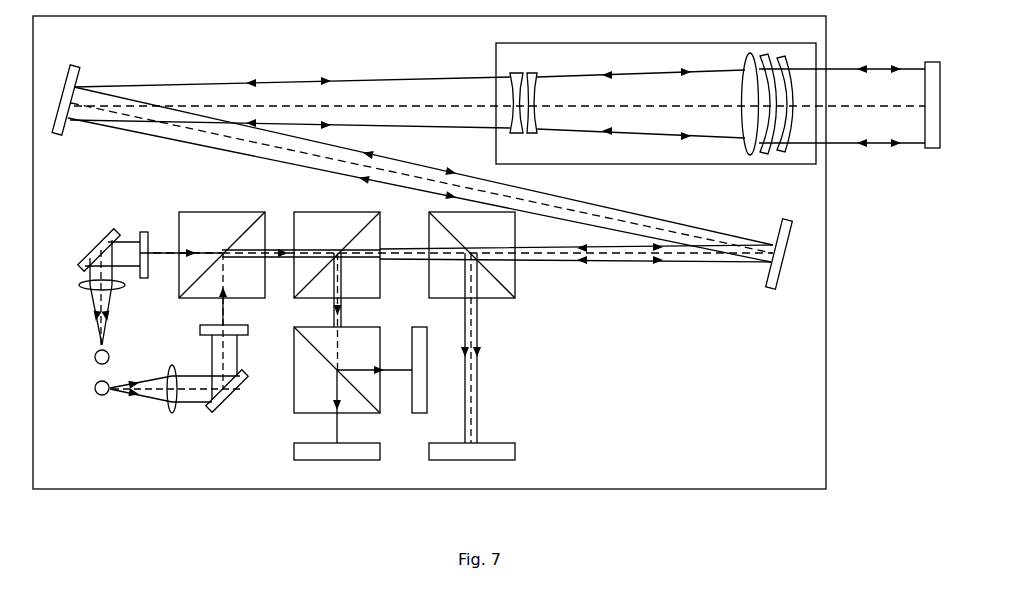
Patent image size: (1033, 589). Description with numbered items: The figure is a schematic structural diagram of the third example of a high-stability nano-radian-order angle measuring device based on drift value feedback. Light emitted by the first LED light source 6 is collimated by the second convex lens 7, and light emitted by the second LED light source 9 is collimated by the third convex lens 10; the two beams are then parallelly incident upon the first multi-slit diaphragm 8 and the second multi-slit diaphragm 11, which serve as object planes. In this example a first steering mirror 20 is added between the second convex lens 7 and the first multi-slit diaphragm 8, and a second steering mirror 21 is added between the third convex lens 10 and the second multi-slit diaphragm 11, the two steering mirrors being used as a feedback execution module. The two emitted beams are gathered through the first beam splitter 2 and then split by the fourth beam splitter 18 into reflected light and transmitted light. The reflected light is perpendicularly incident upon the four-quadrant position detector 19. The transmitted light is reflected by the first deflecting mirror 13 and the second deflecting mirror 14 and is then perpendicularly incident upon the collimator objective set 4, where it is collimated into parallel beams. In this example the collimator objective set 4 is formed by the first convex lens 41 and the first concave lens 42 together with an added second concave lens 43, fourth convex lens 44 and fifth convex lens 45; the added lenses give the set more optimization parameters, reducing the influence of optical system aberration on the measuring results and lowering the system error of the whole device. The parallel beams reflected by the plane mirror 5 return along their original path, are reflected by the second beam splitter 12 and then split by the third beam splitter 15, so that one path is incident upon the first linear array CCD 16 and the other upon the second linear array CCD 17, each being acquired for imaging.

The first beam splitter 2 is at (223, 212).
The collimator objective set 4 is at (653, 44).
The plane mirror 5 is at (932, 62).
The first LED light source 6 is at (95, 361).
The second convex lens 7 is at (85, 287).
The first multi-slit diaphragm 8 is at (146, 232).
The second LED light source 9 is at (97, 395).
The third convex lens 10 is at (172, 415).
The second multi-slit diaphragm 11 is at (250, 327).
The second beam splitter 12 is at (338, 212).
The first deflecting mirror 13 is at (784, 220).
The second deflecting mirror 14 is at (70, 65).
The third beam splitter 15 is at (380, 328).
The first linear array CCD 16 is at (380, 444).
The second linear array CCD 17 is at (427, 328).
The fourth beam splitter 18 is at (513, 287).
The four-quadrant position detector 19 is at (515, 444).
The first steering mirror 20 is at (112, 232).
The second steering mirror 21 is at (249, 378).
The first convex lens 41 is at (748, 54).
The first concave lens 42 is at (522, 72).
The second concave lens 43 is at (537, 72).
The fourth convex lens 44 is at (766, 55).
The fifth convex lens 45 is at (782, 56).